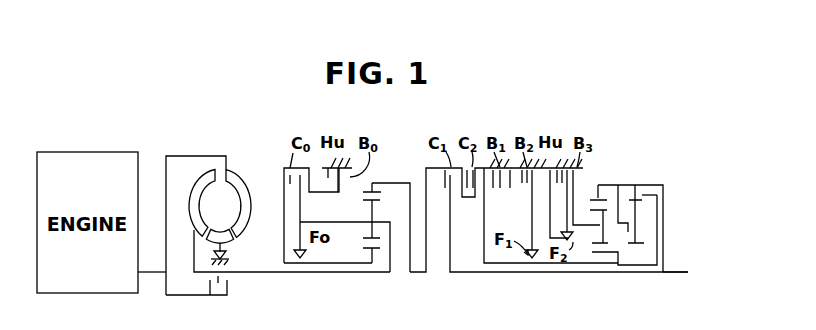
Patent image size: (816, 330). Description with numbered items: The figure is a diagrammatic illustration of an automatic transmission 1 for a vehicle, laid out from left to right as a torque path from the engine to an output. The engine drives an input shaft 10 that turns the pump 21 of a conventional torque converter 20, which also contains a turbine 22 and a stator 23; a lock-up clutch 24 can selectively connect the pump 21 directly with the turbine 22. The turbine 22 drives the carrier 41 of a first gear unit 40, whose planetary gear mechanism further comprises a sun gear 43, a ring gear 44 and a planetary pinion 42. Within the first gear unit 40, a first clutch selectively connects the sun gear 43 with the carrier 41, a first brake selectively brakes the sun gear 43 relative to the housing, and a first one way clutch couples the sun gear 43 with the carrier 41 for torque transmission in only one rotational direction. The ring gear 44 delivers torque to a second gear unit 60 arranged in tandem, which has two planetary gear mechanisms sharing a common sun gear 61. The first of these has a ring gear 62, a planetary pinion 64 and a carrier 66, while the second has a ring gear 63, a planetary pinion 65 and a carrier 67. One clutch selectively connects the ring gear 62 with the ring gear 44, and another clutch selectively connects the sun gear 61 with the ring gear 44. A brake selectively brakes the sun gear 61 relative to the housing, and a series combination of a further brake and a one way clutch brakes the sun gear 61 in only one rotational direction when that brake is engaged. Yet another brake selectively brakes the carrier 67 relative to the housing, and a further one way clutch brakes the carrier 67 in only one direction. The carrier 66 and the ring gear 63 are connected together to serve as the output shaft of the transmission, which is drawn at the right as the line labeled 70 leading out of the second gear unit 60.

The transmission 1 is at (424, 130).
The input shaft 10 is at (153, 273).
The torque converter 20 is at (203, 154).
The pump 21 is at (238, 177).
The turbine 22 is at (193, 189).
The stator 23 is at (232, 246).
The lock-up clutch 24 is at (226, 278).
The first gear unit 40 is at (389, 146).
The carrier 41 is at (375, 222).
The planetary pinion 42 is at (362, 203).
The sun gear 43 is at (364, 242).
The ring gear 44 is at (367, 188).
The second gear unit 60 is at (603, 144).
The sun gear 61 is at (622, 253).
The ring gear 62 is at (635, 198).
The ring gear 63 is at (598, 185).
The planetary pinion 64 is at (645, 196).
The planetary pinion 65 is at (593, 200).
The carrier 66 is at (618, 240).
The carrier 67 is at (593, 226).
The output shaft 70 is at (689, 275).